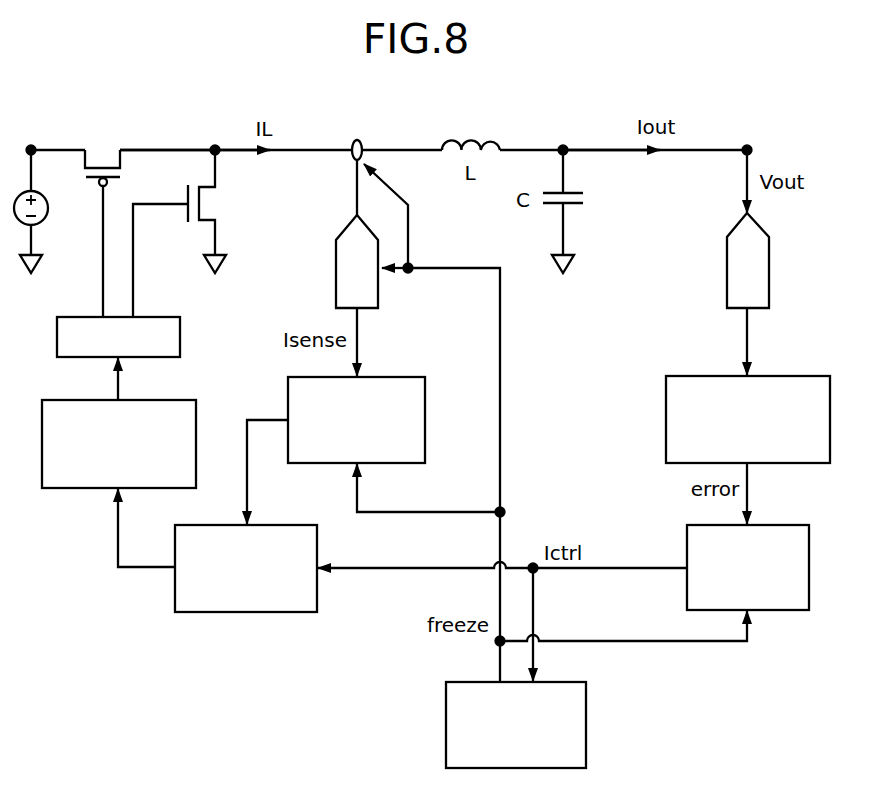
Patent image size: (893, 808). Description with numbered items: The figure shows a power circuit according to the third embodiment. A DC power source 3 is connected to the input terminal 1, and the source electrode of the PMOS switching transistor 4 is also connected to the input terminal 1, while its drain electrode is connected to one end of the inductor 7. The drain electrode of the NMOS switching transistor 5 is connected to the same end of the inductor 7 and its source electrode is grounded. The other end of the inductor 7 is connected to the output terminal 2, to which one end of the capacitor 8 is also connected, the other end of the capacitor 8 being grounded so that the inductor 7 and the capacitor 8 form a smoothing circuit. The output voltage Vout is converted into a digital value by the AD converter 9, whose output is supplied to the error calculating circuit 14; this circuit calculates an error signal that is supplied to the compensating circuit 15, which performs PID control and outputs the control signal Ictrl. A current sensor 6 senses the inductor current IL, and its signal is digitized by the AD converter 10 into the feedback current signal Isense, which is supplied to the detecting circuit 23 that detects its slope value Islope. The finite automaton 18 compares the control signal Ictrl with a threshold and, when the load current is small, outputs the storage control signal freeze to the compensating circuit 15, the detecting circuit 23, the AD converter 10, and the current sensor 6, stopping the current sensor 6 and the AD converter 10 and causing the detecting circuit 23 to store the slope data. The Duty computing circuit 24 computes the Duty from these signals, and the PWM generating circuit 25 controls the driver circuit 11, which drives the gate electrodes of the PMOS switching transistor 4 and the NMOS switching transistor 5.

The input terminal 1 is at (31, 146).
The output terminal 2 is at (747, 146).
The DC power source 3 is at (44, 220).
The PMOS switching transistor 4 is at (102, 160).
The NMOS switching transistor 5 is at (185, 213).
The current sensor 6 is at (357, 140).
The inductor 7 is at (469, 141).
The capacitor 8 is at (577, 194).
The AD converter 9 is at (727, 266).
The AD converter 10 is at (336, 266).
The driver circuit 11 is at (155, 317).
The error calculating circuit 14 is at (774, 376).
The compensating circuit 15 is at (774, 525).
The finite automaton 18 is at (550, 682).
The detecting circuit 23 is at (398, 377).
The Duty computing circuit 24 is at (281, 525).
The PWM generating circuit 25 is at (158, 400).